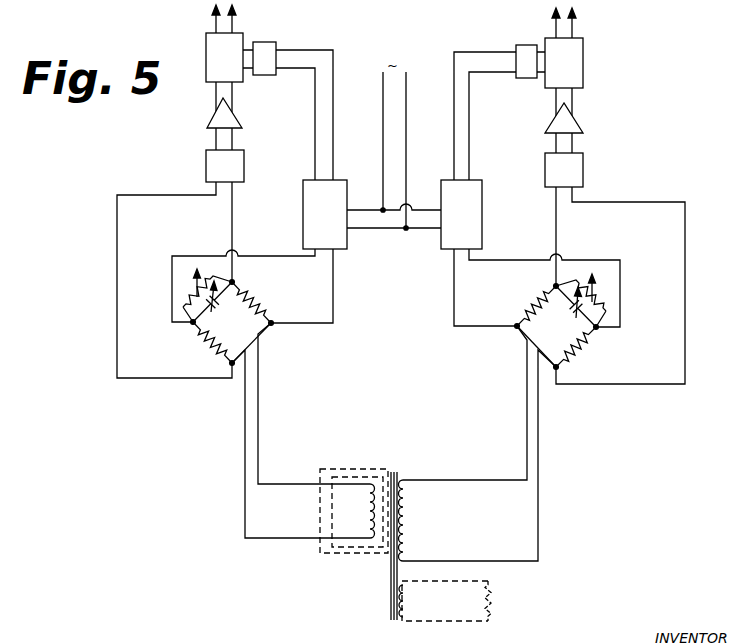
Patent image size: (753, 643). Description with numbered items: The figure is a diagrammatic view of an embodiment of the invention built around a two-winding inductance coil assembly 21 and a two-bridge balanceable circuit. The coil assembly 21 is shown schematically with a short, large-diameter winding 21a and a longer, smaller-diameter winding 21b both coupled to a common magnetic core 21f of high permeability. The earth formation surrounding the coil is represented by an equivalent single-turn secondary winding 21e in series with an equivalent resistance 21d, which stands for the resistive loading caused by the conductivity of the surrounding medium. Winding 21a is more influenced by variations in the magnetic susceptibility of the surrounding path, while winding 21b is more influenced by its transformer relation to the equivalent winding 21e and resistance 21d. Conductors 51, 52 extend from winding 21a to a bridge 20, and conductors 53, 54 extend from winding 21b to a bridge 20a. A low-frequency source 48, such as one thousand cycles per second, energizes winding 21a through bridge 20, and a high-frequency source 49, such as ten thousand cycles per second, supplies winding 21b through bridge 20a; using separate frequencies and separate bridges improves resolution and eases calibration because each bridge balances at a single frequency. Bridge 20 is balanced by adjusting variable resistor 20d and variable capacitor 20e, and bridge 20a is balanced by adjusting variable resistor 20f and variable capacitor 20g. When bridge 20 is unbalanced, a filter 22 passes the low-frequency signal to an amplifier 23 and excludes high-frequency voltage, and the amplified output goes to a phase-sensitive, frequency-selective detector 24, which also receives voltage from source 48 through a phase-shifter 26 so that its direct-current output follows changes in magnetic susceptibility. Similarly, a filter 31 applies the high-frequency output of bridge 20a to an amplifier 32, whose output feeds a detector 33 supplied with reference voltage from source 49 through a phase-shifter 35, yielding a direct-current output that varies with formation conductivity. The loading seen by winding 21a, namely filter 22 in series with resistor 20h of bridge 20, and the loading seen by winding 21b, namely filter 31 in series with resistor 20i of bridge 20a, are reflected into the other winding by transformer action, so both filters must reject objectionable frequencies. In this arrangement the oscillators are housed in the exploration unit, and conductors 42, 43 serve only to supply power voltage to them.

The bridge 20 is at (217, 312).
The bridge 20a is at (569, 319).
The variable resistor 20d is at (196, 293).
The variable capacitor 20e is at (221, 300).
The variable resistor 20f is at (598, 296).
The variable capacitor 20g is at (572, 304).
The resistor 20h is at (258, 304).
The resistor 20i is at (537, 300).
The inductance coil assembly 21 is at (432, 526).
The winding 21a is at (372, 501).
The winding 21b is at (410, 525).
The equivalent series resistance 21d is at (492, 607).
The equivalent single-turn secondary winding 21e is at (412, 608).
The core 21f is at (388, 595).
The filter 22 is at (206, 167).
The amplifier 23 is at (207, 121).
The phase-sensitive, frequency-selective detector 24 is at (206, 50).
The phase-shifter 26 is at (263, 77).
The filter 31 is at (584, 172).
The amplifier 32 is at (573, 118).
The detector 33 is at (585, 65).
The phase-shifter 35 is at (520, 80).
The conductor 42 is at (383, 118).
The conductor 43 is at (406, 160).
The low-frequency source 48 is at (303, 212).
The high-frequency source 49 is at (483, 232).
The conductor 51 is at (245, 424).
The conductor 52 is at (259, 390).
The conductor 53 is at (527, 418).
The conductor 54 is at (540, 438).